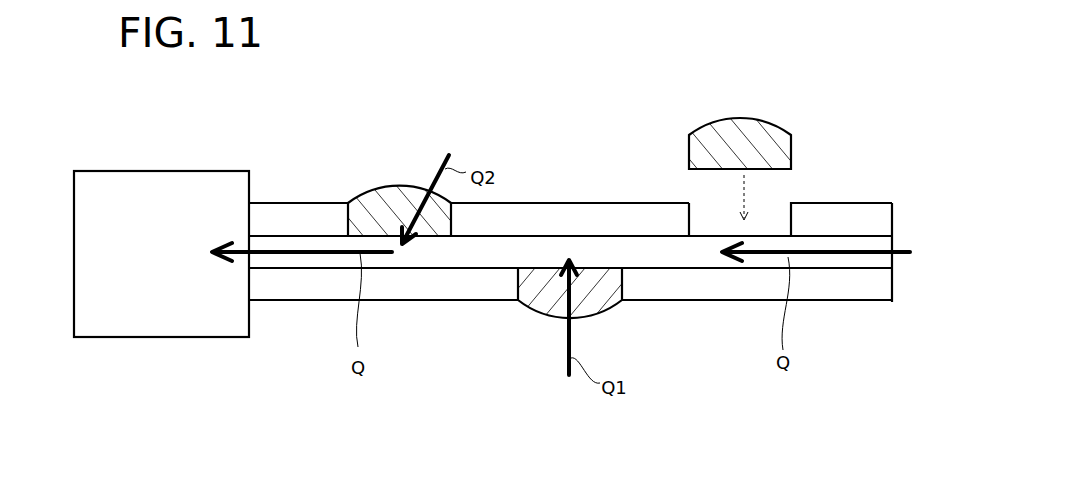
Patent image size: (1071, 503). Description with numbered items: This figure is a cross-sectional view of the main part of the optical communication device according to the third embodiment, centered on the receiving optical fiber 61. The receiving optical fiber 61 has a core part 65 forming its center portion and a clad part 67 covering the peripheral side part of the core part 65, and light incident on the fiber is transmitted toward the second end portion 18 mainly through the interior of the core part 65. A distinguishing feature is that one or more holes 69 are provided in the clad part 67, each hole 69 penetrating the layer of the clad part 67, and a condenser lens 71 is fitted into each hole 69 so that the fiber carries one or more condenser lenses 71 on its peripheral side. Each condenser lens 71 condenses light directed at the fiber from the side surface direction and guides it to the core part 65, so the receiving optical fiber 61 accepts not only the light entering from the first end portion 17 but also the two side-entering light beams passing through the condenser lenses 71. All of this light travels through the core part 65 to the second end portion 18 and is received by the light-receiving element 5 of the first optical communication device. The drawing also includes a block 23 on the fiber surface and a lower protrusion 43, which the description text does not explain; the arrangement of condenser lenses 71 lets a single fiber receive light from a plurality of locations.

The light-receiving element 5 is at (163, 315).
The first end portion 17 is at (888, 326).
The second end portion 18 is at (274, 321).
The cover member 23 is at (842, 218).
The lower protrusion 43 is at (528, 303).
The receiving optical fiber 61 is at (624, 151).
The core part 65 is at (657, 253).
The clad part 67 is at (286, 218).
The hole 69 is at (707, 205).
The condenser lens 71 is at (396, 195).